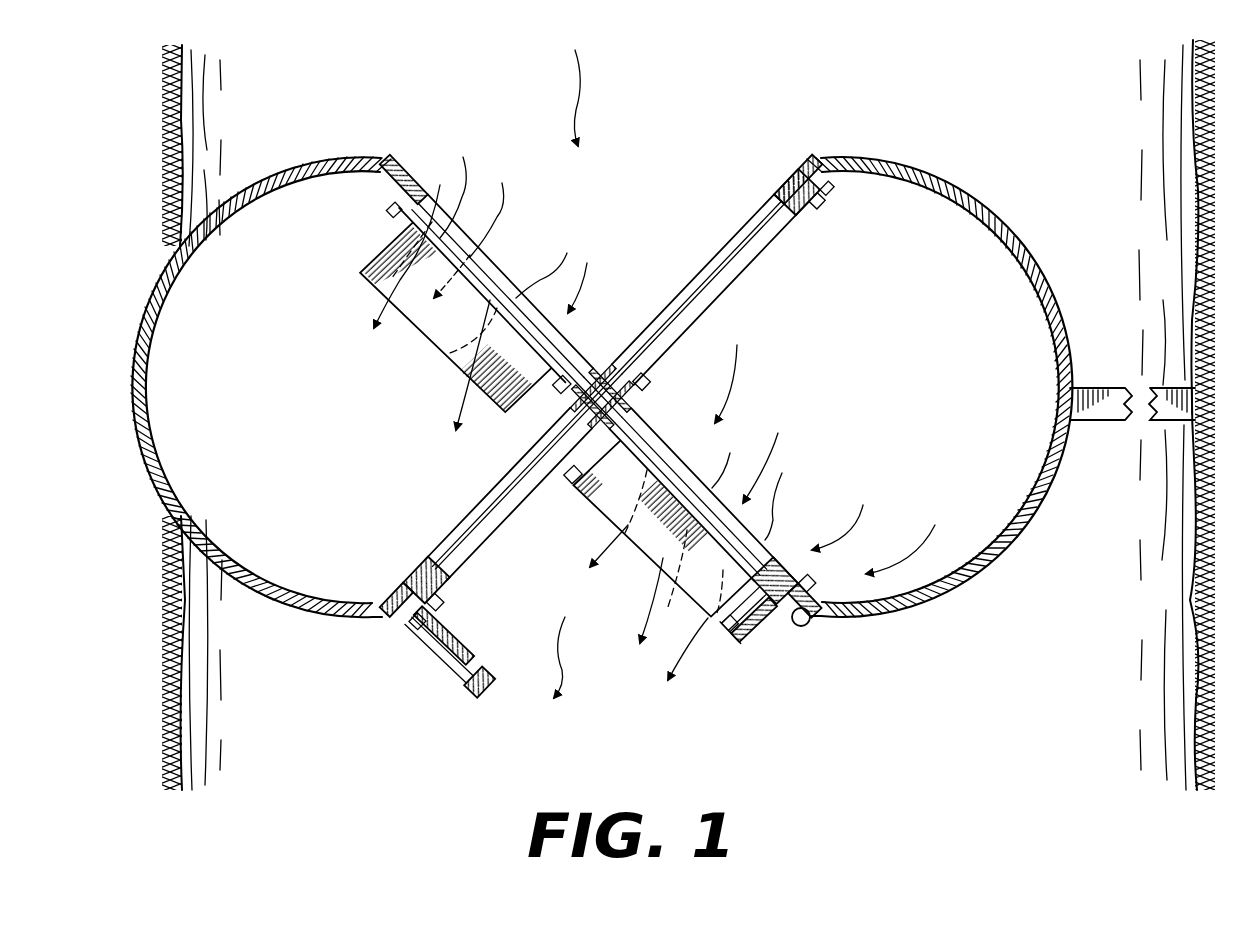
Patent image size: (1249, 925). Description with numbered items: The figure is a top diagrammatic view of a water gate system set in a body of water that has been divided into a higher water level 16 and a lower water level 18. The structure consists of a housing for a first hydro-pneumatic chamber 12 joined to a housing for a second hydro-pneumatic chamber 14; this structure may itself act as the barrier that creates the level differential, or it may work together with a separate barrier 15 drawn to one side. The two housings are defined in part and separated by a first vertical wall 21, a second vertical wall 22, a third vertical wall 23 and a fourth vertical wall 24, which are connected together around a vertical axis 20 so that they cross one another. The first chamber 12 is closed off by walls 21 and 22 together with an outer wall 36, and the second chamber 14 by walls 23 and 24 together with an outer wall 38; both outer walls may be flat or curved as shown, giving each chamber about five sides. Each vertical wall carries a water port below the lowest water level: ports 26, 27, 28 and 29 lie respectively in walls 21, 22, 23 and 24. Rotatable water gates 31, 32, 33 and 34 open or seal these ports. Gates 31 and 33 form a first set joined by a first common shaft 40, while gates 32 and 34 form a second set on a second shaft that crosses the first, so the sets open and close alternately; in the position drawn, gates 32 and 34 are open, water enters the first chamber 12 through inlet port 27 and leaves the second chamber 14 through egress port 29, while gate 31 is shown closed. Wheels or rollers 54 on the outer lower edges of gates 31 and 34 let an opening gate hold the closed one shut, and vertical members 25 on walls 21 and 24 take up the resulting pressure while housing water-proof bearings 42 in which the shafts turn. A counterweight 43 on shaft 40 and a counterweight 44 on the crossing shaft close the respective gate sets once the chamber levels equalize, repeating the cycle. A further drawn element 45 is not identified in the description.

The first hydro-pneumatic chamber 12 is at (261, 407).
The second hydro-pneumatic chamber 14 is at (939, 387).
The separate barrier 15 is at (1102, 385).
The higher water level 16 is at (638, 84).
The lower water level 18 is at (618, 726).
The vertical axis 20 is at (605, 355).
The first vertical wall 21 is at (420, 577).
The second vertical wall 22 is at (425, 198).
The third vertical wall 23 is at (805, 185).
The fourth vertical wall 24 is at (797, 565).
The vertical member 25 is at (462, 625).
The water port 26 is at (508, 494).
The water port 27 is at (500, 277).
The water port 28 is at (723, 270).
The water port 29 is at (705, 458).
The water gate 31 is at (475, 508).
The water gate 32 is at (426, 307).
The water gate 33 is at (720, 245).
The water gate 34 is at (662, 558).
The wall 36 is at (172, 462).
The wall 38 is at (1008, 248).
The first common shaft 40 is at (828, 188).
The water-proof bearings 42 is at (395, 208).
The counterweight 43 is at (485, 672).
The counterweight 44 is at (802, 628).
The inner stub tube 45 is at (440, 655).
The wheels or rollers 54 is at (563, 477).